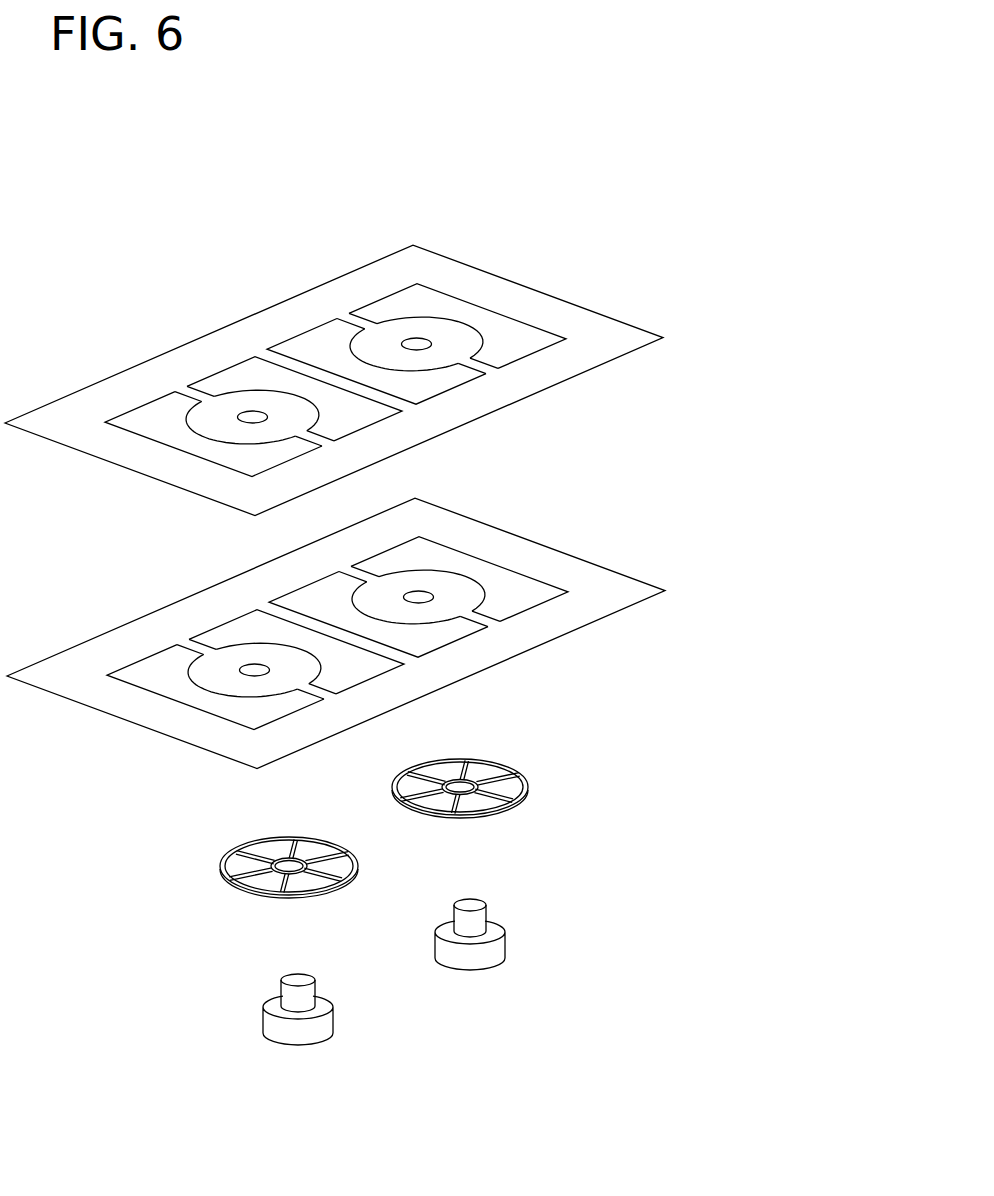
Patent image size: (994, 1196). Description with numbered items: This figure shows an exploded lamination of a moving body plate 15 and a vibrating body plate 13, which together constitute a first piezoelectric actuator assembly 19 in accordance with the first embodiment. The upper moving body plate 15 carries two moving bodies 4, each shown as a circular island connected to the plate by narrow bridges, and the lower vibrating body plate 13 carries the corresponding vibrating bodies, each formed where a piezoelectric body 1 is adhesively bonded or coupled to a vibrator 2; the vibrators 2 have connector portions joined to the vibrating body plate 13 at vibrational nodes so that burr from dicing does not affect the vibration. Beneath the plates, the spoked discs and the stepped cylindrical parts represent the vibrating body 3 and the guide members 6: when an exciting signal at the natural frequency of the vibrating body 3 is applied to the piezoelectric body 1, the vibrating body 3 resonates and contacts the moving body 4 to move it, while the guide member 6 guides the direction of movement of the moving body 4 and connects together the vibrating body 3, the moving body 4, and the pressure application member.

The piezoelectric body 1 is at (240, 862).
The vibrator 2 is at (343, 624).
The vibrating body 3 is at (725, 830).
The moving body 4 is at (223, 405).
The guide member 6 is at (472, 905).
The vibrating body plate 13 is at (651, 492).
The moving body plate 15 is at (680, 268).
The first piezoelectric actuator assembly 19 is at (742, 205).